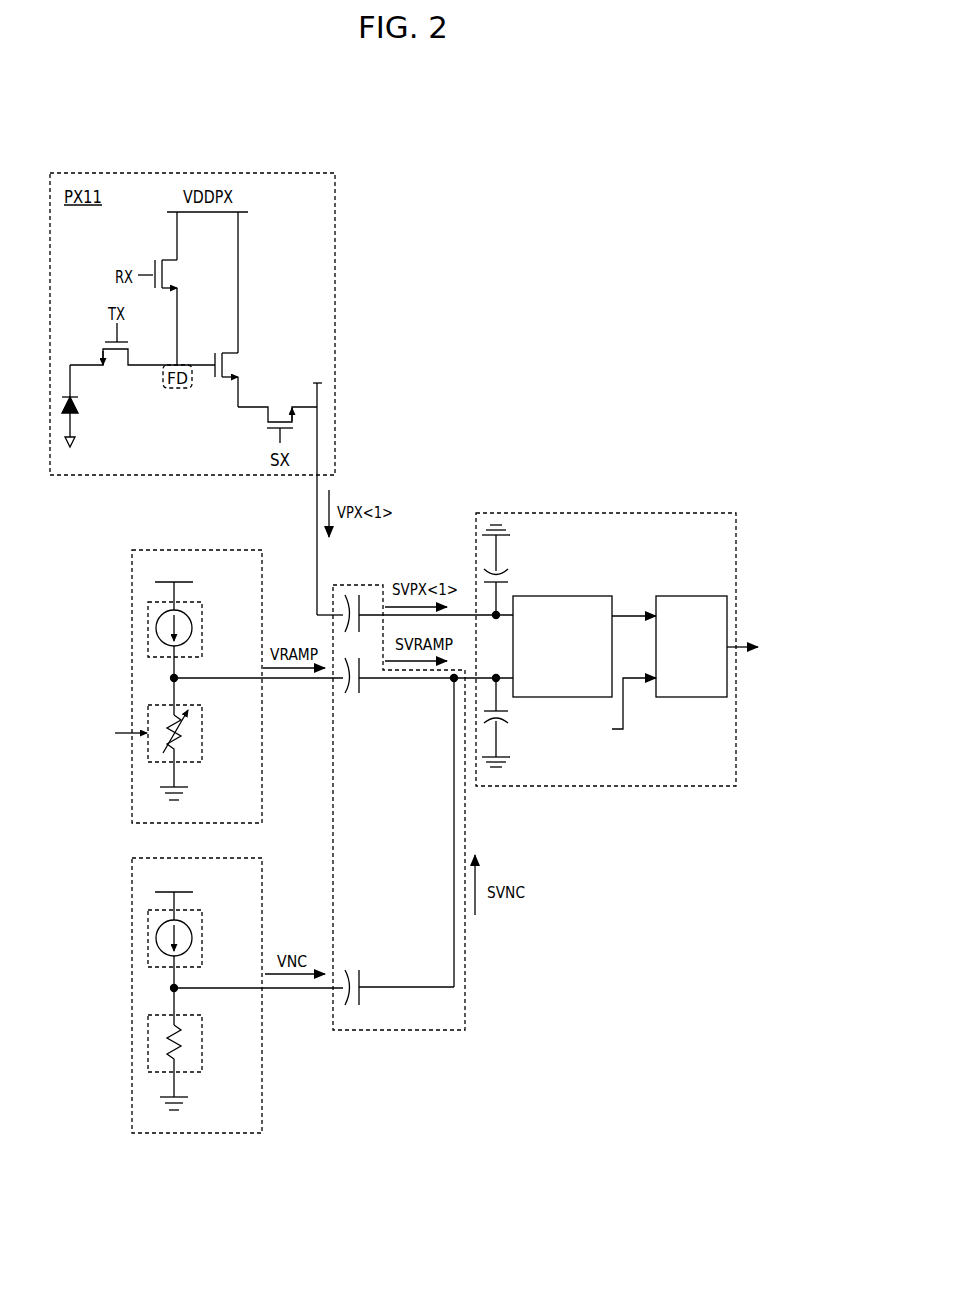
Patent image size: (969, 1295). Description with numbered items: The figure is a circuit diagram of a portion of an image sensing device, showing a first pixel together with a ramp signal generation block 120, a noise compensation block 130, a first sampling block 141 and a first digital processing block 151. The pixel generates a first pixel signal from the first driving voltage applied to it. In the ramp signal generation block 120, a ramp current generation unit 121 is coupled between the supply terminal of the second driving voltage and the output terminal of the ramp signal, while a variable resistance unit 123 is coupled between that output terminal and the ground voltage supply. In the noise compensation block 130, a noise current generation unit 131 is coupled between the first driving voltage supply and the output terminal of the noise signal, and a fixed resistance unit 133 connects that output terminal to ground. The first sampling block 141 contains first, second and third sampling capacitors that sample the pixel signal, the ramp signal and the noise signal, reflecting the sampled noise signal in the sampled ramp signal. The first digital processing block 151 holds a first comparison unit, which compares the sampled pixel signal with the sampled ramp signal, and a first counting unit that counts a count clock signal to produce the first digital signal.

The ramp signal generation block 120 is at (223, 550).
The ramp current generation unit 121 is at (195, 602).
The variable resistance unit 123 is at (195, 705).
The noise compensation block 130 is at (223, 858).
The noise current generation unit 131 is at (195, 912).
The fixed resistance unit 133 is at (195, 1015).
The first sampling block 141 is at (357, 583).
The first digital processing block 151 is at (725, 513).